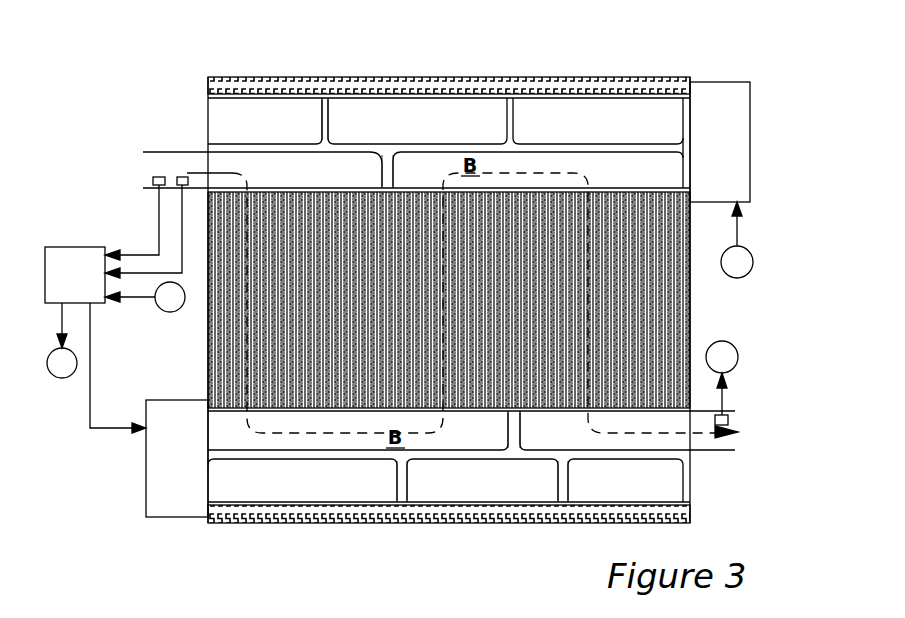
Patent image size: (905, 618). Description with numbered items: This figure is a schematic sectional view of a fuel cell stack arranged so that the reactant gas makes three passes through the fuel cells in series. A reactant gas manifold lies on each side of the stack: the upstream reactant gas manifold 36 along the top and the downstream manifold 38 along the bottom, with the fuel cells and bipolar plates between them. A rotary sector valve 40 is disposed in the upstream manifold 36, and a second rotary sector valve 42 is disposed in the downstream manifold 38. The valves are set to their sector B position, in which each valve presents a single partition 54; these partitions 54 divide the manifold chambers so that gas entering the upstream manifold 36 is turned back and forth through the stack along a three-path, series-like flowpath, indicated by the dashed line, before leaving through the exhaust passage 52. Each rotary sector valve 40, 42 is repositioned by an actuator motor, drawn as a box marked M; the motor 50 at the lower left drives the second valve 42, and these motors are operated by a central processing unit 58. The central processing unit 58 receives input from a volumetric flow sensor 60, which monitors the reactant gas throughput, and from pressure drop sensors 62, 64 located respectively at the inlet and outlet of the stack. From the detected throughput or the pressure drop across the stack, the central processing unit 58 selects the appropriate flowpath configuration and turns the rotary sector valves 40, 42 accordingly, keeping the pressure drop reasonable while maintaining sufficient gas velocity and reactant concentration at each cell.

The upstream reactant gas manifold 36 is at (654, 190).
The downstream manifold 38 is at (325, 412).
The rotary sector valve 40 is at (613, 143).
The second rotary sector valve 42 is at (290, 462).
The motor 50 is at (163, 492).
The exhaust passage 52 is at (732, 148).
The single partition 54 is at (320, 118).
The central processing unit 58 is at (75, 247).
The volumetric flow sensor 60 is at (153, 177).
The pressure drop sensor 62 is at (178, 177).
The pressure drop sensor 64 is at (730, 418).